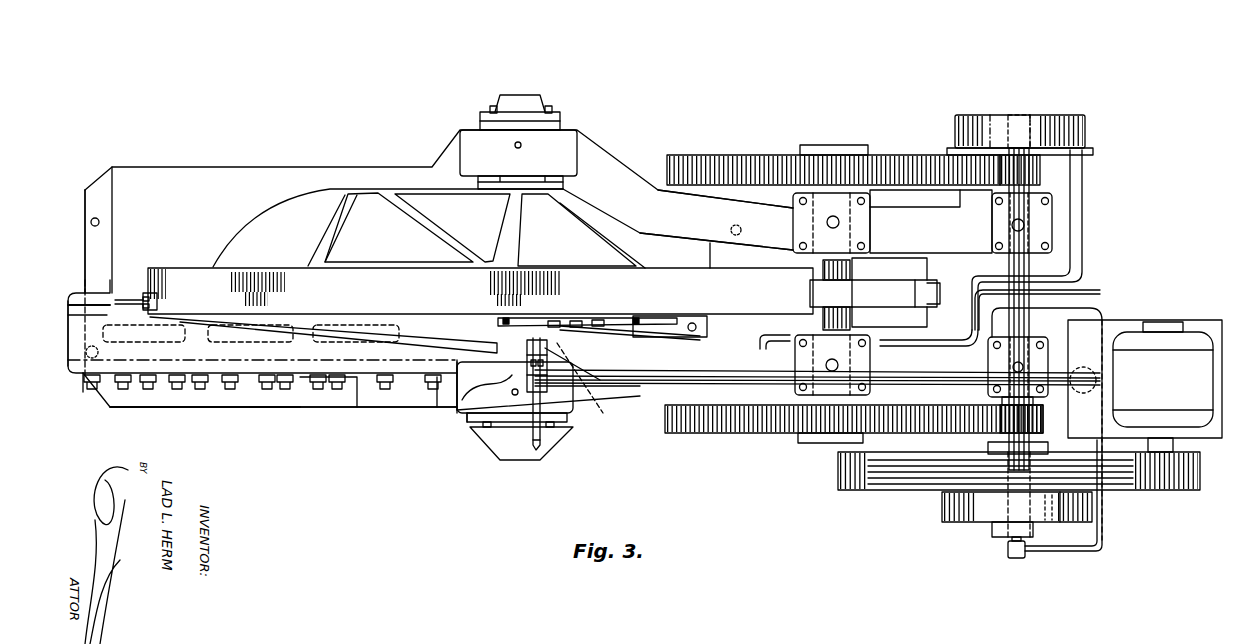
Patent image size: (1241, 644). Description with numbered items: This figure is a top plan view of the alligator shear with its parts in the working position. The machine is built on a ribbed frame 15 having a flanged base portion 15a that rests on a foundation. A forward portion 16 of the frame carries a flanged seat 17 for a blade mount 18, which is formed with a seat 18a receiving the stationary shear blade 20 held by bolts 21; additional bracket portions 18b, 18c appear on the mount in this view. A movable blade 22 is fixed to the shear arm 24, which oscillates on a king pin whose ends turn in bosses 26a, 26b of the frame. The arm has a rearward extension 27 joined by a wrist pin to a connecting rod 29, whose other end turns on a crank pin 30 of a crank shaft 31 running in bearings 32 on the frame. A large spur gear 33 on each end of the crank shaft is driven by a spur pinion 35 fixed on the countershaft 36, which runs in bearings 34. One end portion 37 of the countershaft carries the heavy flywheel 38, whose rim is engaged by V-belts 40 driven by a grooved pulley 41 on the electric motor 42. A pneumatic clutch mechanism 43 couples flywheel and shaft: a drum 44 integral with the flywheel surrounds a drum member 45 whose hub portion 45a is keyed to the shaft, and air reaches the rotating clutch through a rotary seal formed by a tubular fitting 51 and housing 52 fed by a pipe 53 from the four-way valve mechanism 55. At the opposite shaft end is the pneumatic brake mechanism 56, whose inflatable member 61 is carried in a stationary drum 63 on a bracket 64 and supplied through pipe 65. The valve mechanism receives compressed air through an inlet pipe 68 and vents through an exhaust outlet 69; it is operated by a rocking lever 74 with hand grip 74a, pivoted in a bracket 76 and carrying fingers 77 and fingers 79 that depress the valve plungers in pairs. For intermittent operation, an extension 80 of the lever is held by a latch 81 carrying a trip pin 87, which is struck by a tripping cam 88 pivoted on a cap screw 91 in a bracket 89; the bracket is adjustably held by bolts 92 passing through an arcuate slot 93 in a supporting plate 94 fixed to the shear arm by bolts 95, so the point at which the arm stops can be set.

The frame 15 is at (270, 166).
The flanged base portion 15a is at (180, 402).
The forward portion 16 is at (117, 394).
The flanged seat 17 is at (122, 298).
The blade mount 18 is at (218, 356).
The seat 18a is at (100, 312).
The bracket flange 18b is at (330, 397).
The bracket flange 18c is at (263, 388).
The shear blade 20 is at (122, 306).
The bolts 21 is at (123, 388).
The movable blade 22 is at (140, 296).
The shear arm 24 is at (380, 186).
The boss 26a is at (470, 418).
The boss 26b is at (488, 148).
The rearwardly disposed extension 27 is at (673, 278).
The connecting rod 29 is at (883, 293).
The crank pin 30 is at (918, 270).
The crank shaft 31 is at (793, 212).
The bearings 32 is at (795, 230).
The large spur gear 33 is at (728, 155).
The bearings 34 is at (1042, 232).
The driving spur pinion 35 is at (1057, 173).
The countershaft 36 is at (1033, 130).
The end portion 37 is at (1003, 505).
The flywheel 38 is at (873, 490).
The V-belts 40 is at (918, 480).
The V-belt pulley 41 is at (1170, 490).
The electric motor 42 is at (1187, 343).
The clutch or coupling mechanism 43 is at (1070, 523).
The drum 44 is at (1047, 513).
The drum member 45 is at (1040, 522).
The hub portion 45a is at (1002, 527).
The hollow tubular fitting 51 is at (1007, 538).
The housing 52 is at (1013, 560).
The pipe 53 is at (1105, 310).
The four-way valve mechanism 55 is at (507, 438).
The brake mechanism 56 is at (990, 108).
The inflatable or expansible member 61 is at (1020, 113).
The stationary drum or housing 63 is at (972, 122).
The bracket 64 is at (960, 196).
The air supply pipe 65 is at (1085, 193).
The inlet pipe 68 is at (1100, 292).
The exhaust outlet 69 is at (547, 410).
The rocking lever 74 is at (533, 447).
The hand grip 74a is at (540, 448).
The bracket 76 is at (473, 402).
The fingers 77 is at (527, 373).
The fingers 79 is at (493, 404).
The extension 80 is at (497, 336).
The latch 81 is at (553, 395).
The trip pin 87 is at (587, 385).
The tripping cam 88 is at (560, 343).
The bracket 89 is at (565, 320).
The cap screw 91 is at (573, 384).
The bolts 92 is at (578, 326).
The arcuate slot 93 is at (595, 324).
The supporting plate 94 is at (523, 323).
The bolts 95 is at (506, 322).